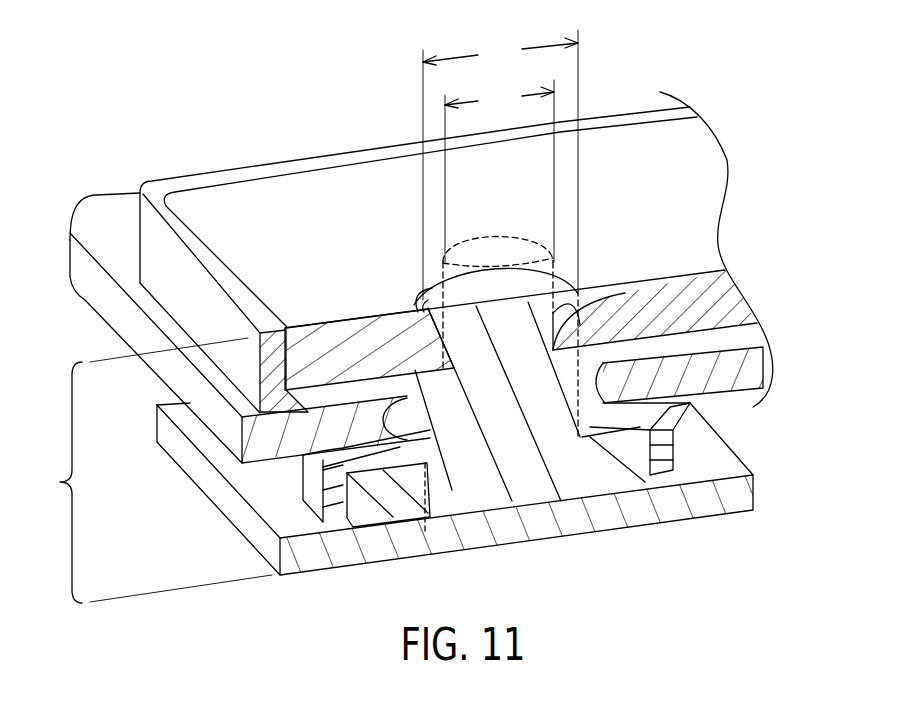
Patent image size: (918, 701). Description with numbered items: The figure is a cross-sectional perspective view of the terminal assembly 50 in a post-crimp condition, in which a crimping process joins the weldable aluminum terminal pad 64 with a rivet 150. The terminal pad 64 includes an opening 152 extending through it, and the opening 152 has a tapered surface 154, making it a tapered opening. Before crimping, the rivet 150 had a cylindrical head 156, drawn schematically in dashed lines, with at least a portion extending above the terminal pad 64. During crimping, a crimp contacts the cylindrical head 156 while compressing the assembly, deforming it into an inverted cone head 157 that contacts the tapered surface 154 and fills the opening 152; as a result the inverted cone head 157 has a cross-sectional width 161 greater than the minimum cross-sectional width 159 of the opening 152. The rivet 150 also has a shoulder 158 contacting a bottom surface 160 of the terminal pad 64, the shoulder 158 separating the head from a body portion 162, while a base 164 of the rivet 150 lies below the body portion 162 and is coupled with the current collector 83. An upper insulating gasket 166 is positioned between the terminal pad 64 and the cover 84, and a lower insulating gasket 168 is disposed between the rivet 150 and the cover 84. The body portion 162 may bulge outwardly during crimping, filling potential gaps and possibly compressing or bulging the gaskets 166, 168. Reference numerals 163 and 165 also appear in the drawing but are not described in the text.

The terminal assembly 50 is at (149, 470).
The weldable aluminum terminal pad 64 is at (598, 150).
The current collector 83 is at (297, 563).
The cover 84 is at (103, 213).
The rivet 150 is at (513, 290).
The opening 152 is at (428, 295).
The tapered surface 154 is at (560, 287).
The cylindrical head 156 is at (468, 232).
The inverted cone head 157 is at (418, 283).
The shoulder 158 is at (737, 290).
The minimum cross-sectional width 159 is at (499, 171).
The bottom surface 160 is at (370, 522).
The cross-sectional width 161 is at (500, 165).
The body portion 162 is at (558, 416).
The bottom surface 163 is at (620, 378).
The base 164 is at (630, 478).
The tab 165 is at (607, 433).
The upper insulating gasket 166 is at (458, 498).
The lower insulating gasket 168 is at (416, 535).